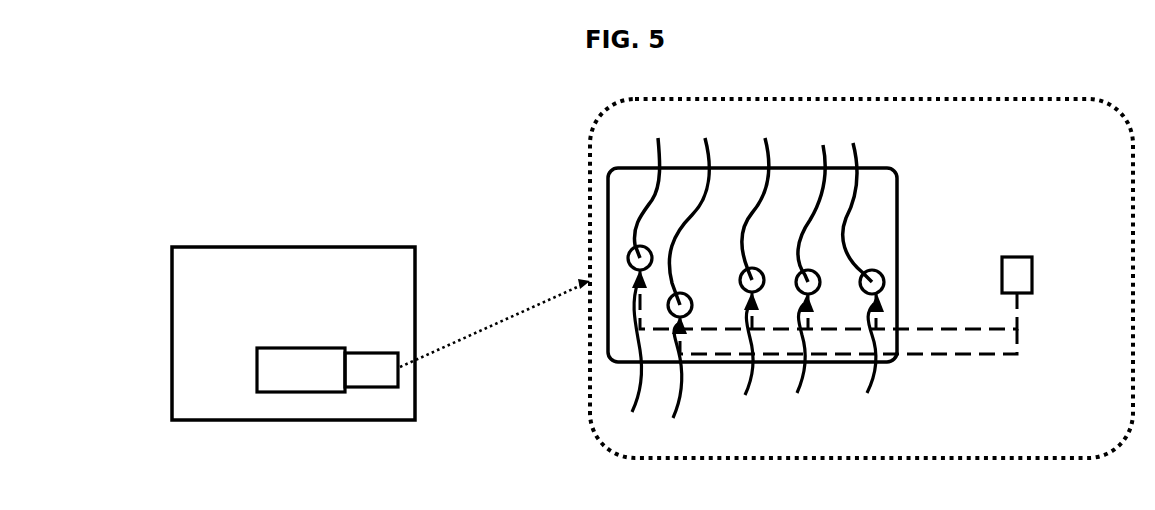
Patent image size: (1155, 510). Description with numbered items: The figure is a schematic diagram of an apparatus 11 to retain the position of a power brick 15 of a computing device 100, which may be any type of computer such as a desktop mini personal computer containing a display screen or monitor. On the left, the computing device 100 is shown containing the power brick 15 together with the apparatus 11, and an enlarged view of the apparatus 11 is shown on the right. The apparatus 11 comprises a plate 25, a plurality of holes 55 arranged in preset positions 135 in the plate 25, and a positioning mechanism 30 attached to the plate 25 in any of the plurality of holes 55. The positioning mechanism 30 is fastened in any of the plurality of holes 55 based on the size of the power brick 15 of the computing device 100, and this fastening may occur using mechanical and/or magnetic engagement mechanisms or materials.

The computing device 100 is at (292, 247).
The power brick 15 is at (290, 347).
The apparatus 11 is at (360, 352).
The plate 25 is at (880, 223).
The plurality of holes 55 is at (756, 215).
The positioning mechanism 30 is at (1022, 274).
The preset positions 135 is at (747, 361).